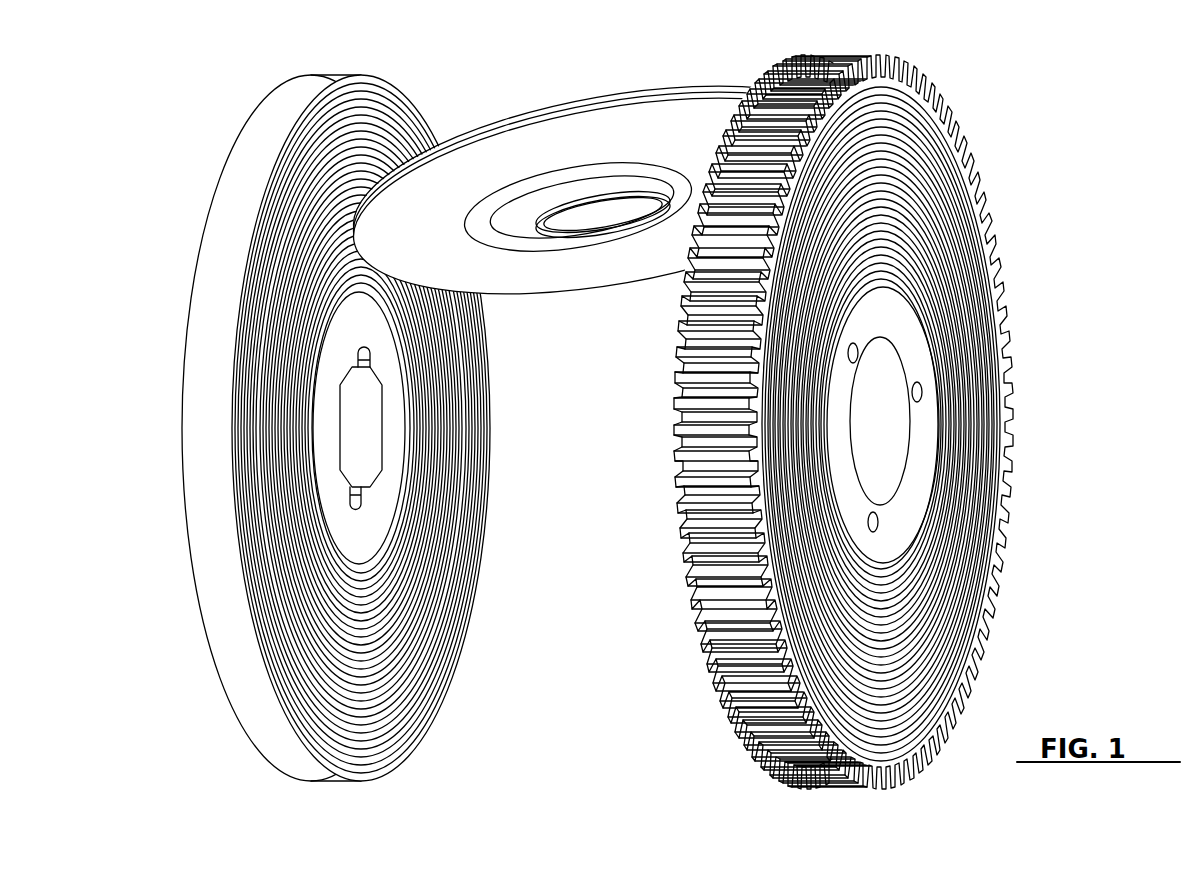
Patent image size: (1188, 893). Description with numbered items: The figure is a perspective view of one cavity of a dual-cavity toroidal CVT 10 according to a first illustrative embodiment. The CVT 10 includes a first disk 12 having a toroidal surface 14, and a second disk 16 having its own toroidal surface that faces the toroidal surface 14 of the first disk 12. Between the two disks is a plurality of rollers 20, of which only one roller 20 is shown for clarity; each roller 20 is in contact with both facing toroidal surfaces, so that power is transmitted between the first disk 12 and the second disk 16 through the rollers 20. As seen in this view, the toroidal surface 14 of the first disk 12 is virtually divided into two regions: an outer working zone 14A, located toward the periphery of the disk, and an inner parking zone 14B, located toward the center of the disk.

The dual-cavity toroidal CVT 10 is at (621, 411).
The first disk 12 is at (369, 418).
The toroidal surface 14 is at (405, 414).
The outer working zone 14A is at (455, 527).
The inner parking zone 14B is at (350, 573).
The second disk 16 is at (805, 78).
The roller 20 is at (600, 105).